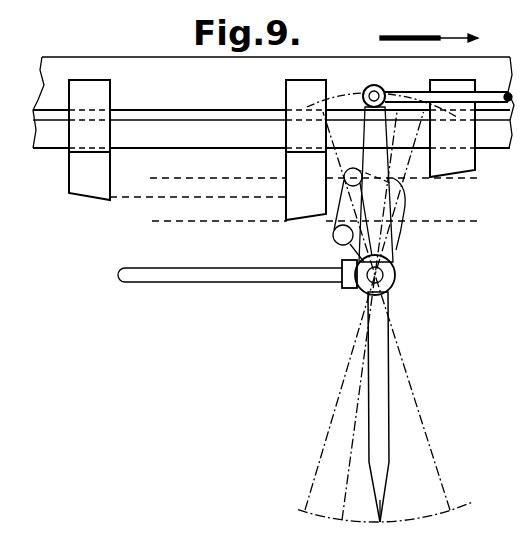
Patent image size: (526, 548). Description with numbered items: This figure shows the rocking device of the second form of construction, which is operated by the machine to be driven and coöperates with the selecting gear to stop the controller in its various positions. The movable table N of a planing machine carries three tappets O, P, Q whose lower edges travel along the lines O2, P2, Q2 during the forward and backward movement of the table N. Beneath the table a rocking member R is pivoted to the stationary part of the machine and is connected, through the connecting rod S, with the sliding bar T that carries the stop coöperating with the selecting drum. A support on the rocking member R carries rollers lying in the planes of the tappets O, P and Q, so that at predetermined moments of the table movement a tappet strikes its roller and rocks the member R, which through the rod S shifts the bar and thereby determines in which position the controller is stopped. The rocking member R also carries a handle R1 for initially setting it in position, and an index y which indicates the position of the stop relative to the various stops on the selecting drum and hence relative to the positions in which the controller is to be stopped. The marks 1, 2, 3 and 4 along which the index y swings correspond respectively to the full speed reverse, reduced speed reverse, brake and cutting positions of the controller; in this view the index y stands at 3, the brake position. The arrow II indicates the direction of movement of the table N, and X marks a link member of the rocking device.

The table N is at (273, 102).
The tappet O is at (110, 156).
The line of travel of tappet O O2 is at (140, 199).
The tappet P is at (290, 165).
The line of travel of tappet P P2 is at (203, 224).
The tappet Q is at (476, 158).
The line of travel of tappet Q Q2 is at (224, 179).
The connecting rod S is at (430, 96).
The direction of movement arrow II is at (429, 26).
The index y is at (386, 383).
The index position 1 is at (357, 312).
The index position 2 is at (361, 316).
The index position 3 is at (390, 511).
The index position 4 is at (386, 314).
The rocking member R is at (396, 250).
The handle R1 is at (152, 283).
The link / lever X is at (406, 206).